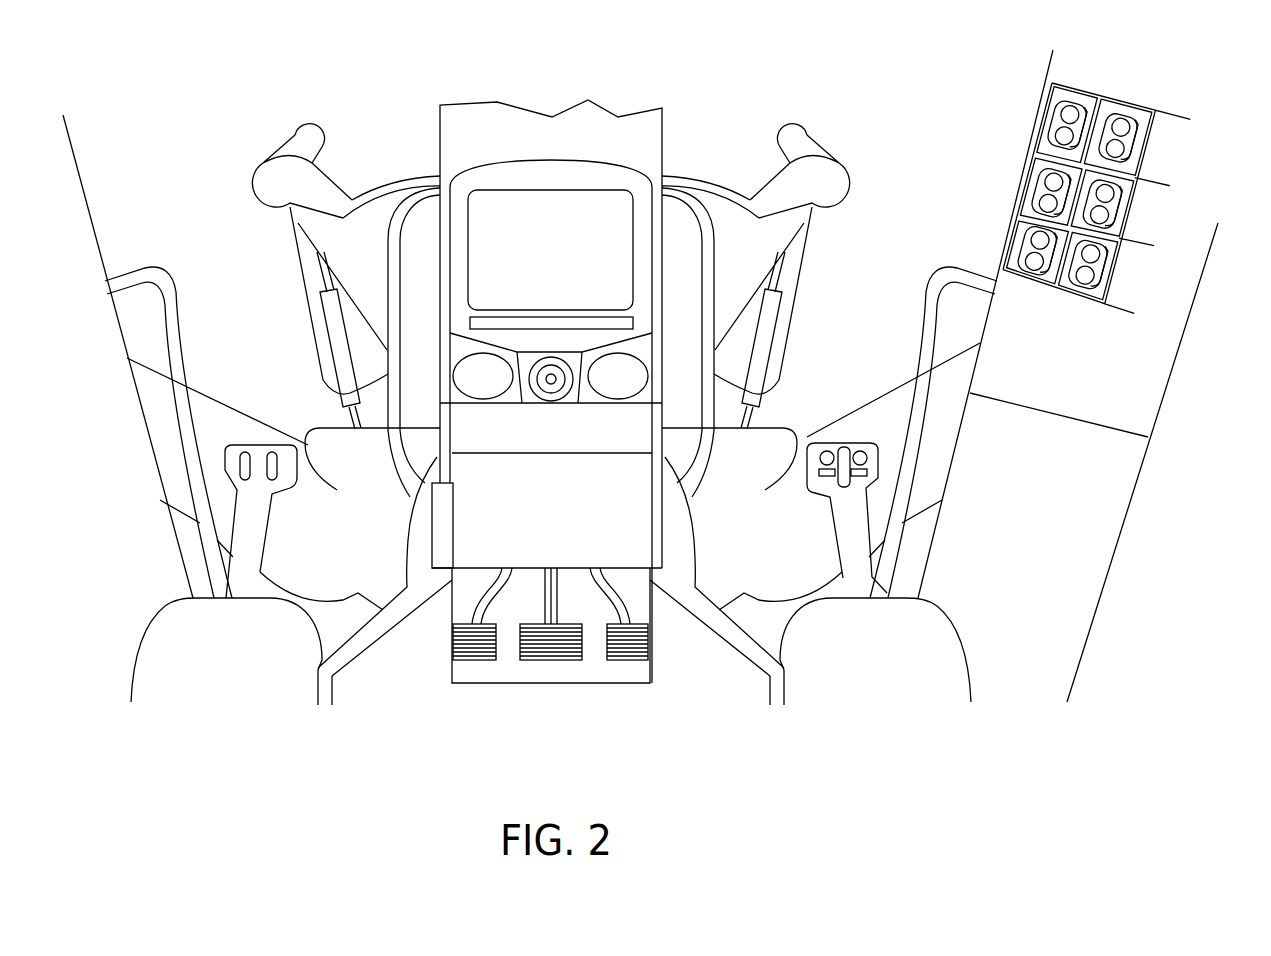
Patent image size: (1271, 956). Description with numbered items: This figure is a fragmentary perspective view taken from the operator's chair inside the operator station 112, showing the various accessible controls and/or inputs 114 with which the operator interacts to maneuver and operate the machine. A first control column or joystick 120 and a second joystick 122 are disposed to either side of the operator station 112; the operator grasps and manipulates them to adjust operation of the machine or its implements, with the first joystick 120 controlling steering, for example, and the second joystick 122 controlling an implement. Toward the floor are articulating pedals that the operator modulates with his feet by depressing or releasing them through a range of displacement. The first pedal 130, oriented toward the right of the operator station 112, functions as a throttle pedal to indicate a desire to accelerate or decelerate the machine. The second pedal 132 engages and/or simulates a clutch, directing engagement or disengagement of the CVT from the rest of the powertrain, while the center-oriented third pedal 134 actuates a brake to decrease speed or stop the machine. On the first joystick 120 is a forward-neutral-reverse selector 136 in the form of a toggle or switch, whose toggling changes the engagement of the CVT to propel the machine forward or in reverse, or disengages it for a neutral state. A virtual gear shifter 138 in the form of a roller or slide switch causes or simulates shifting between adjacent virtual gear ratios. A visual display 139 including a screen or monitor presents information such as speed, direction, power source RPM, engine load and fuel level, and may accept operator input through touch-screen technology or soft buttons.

The operator station 112 is at (875, 185).
The controls and/or inputs 114 is at (457, 725).
The first control column or joystick 120 is at (171, 438).
The second joystick 122 is at (855, 523).
The first pedal 130 is at (648, 645).
The second pedal 132 is at (453, 640).
The third pedal 134 is at (545, 640).
The forward-neutral-reverse (F-N-R) selector 136 is at (247, 450).
The virtual gear shifter 138 is at (273, 450).
The visual display 139 is at (561, 178).